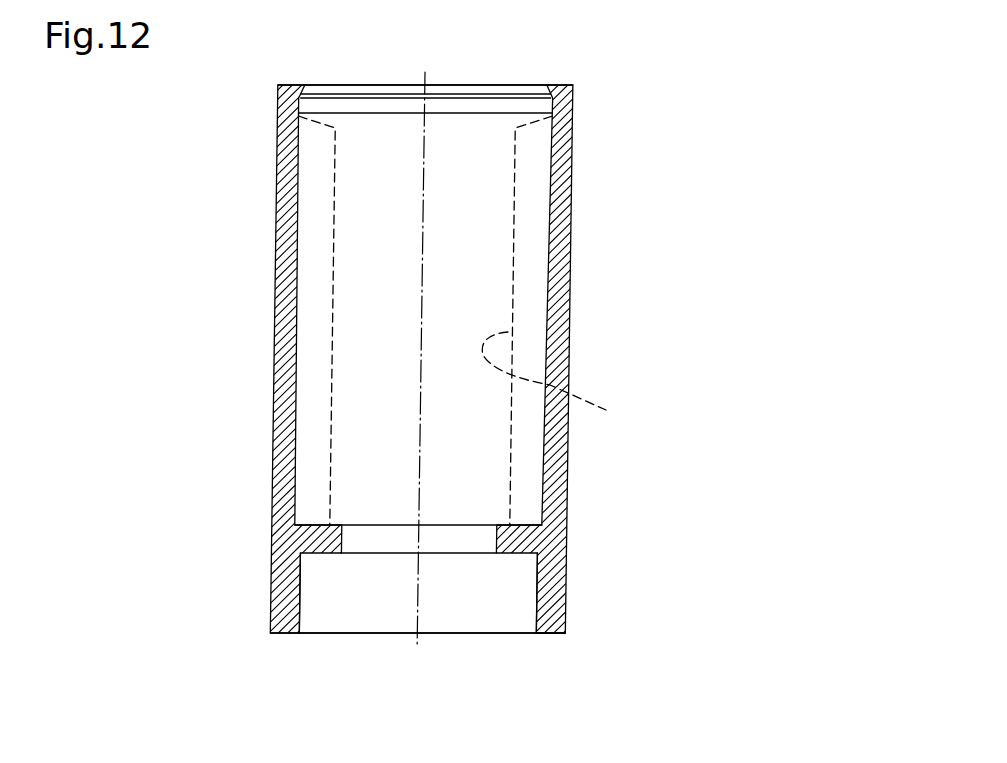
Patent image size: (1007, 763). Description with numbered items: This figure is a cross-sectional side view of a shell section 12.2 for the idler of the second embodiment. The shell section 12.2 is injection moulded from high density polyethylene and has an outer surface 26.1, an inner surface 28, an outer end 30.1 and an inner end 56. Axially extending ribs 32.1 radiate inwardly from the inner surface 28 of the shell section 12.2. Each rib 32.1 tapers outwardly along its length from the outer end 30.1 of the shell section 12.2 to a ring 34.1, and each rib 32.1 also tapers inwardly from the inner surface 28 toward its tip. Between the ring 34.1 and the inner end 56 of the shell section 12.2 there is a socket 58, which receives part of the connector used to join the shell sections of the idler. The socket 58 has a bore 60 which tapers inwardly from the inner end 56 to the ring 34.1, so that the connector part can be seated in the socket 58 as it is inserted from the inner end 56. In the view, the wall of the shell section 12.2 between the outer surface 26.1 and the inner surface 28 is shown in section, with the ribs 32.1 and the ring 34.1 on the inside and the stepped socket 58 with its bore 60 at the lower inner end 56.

The shell section 12.2 is at (610, 278).
The outer surface 26.1 is at (569, 350).
The inner wall surface 28 is at (547, 497).
The outer end 30.1 is at (563, 84).
The rib 32.1 is at (585, 384).
The ring 34.1 is at (537, 553).
The inner end 56 is at (550, 635).
The socket 58 is at (352, 615).
The bore 60 is at (547, 606).